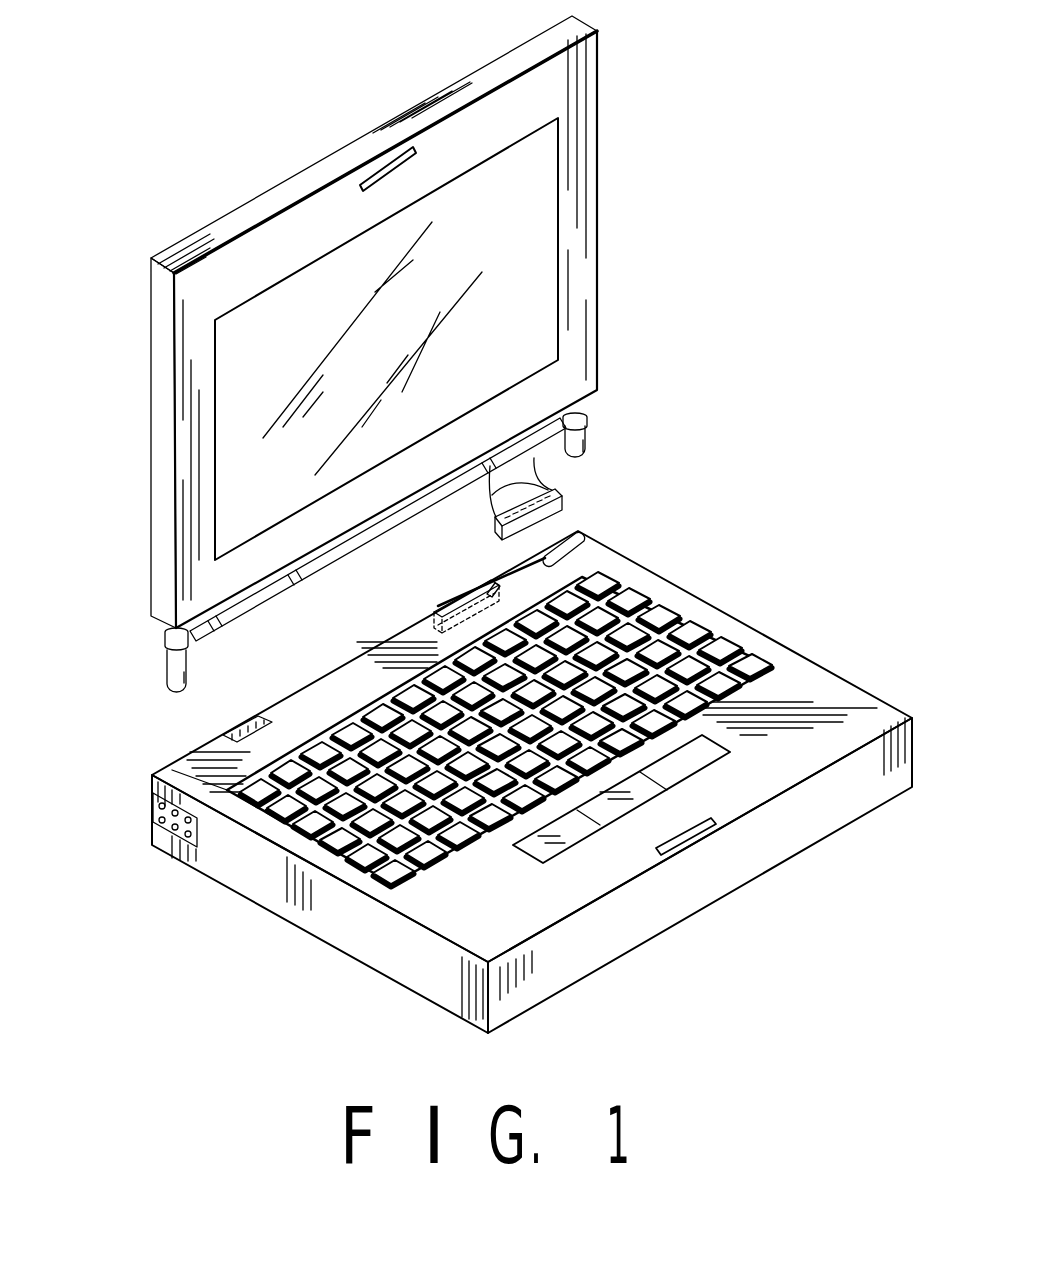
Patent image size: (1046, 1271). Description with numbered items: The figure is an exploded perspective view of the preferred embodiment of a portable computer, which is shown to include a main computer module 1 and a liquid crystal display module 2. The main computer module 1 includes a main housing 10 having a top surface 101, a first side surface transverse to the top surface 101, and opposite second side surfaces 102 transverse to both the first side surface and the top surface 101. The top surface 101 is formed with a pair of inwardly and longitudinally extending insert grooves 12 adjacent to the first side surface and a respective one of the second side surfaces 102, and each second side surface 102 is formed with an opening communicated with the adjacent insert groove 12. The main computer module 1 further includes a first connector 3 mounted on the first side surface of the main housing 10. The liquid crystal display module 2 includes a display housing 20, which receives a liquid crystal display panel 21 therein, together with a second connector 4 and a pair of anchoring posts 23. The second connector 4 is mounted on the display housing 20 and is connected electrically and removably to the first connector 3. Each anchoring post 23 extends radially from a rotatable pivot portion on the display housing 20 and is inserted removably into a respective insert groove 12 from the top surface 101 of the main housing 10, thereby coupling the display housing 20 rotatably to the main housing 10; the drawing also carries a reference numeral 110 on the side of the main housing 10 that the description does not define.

The main computer module 1 is at (489, 550).
The liquid crystal display module 2 is at (394, 411).
The first connector 3 is at (438, 618).
The second connector 4 is at (553, 483).
The main housing 10 is at (506, 763).
The insert grooves 12 is at (230, 723).
The display housing 20 is at (573, 305).
The liquid crystal display panel 21 is at (543, 215).
The anchoring posts 23 is at (172, 668).
The top surface 101 is at (400, 903).
The second side surfaces 102 is at (287, 892).
The connector 110 is at (162, 848).